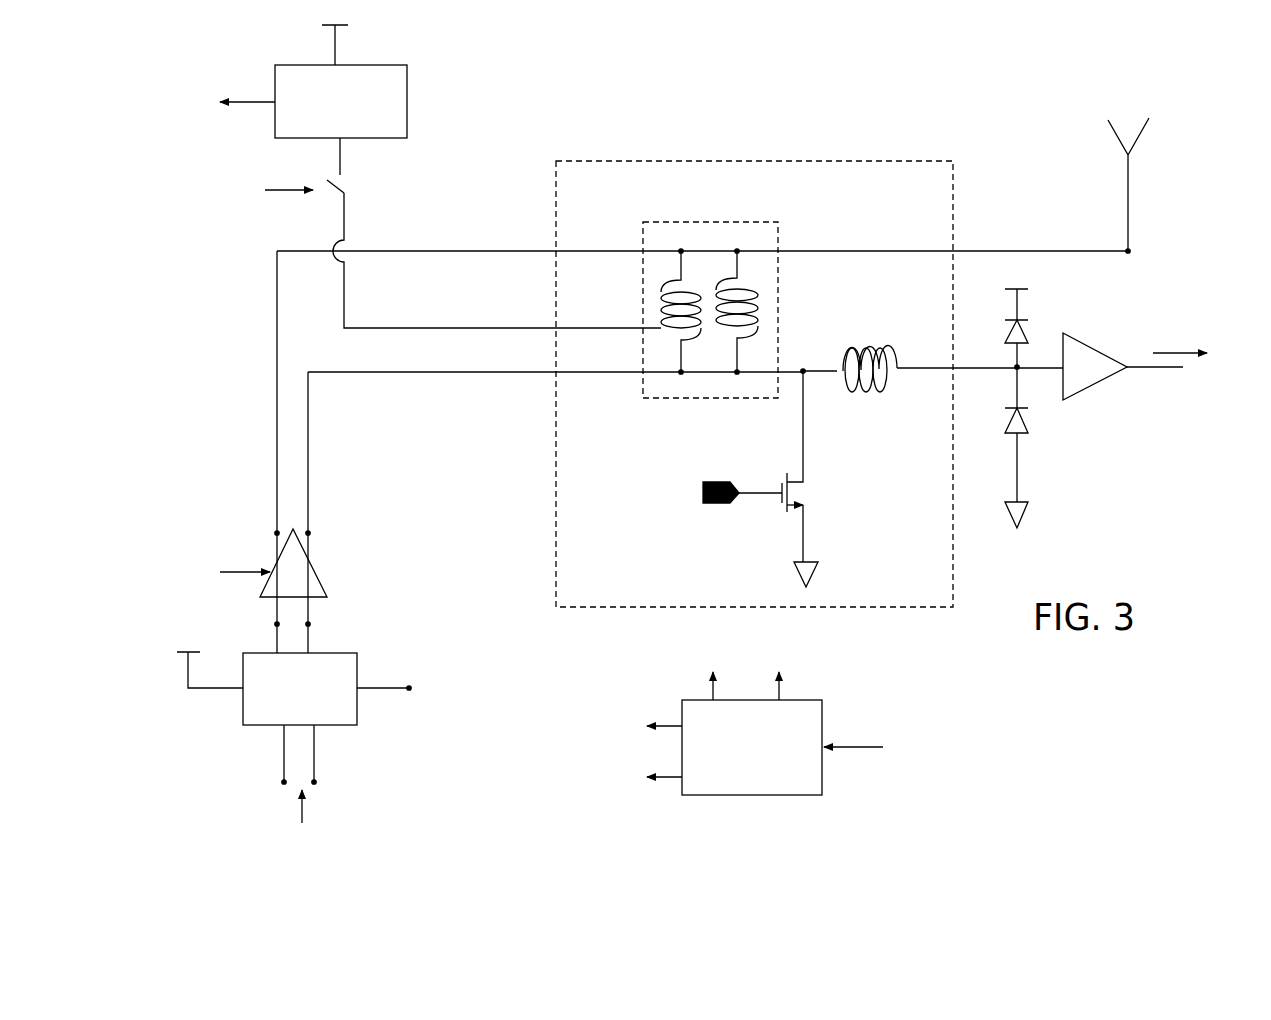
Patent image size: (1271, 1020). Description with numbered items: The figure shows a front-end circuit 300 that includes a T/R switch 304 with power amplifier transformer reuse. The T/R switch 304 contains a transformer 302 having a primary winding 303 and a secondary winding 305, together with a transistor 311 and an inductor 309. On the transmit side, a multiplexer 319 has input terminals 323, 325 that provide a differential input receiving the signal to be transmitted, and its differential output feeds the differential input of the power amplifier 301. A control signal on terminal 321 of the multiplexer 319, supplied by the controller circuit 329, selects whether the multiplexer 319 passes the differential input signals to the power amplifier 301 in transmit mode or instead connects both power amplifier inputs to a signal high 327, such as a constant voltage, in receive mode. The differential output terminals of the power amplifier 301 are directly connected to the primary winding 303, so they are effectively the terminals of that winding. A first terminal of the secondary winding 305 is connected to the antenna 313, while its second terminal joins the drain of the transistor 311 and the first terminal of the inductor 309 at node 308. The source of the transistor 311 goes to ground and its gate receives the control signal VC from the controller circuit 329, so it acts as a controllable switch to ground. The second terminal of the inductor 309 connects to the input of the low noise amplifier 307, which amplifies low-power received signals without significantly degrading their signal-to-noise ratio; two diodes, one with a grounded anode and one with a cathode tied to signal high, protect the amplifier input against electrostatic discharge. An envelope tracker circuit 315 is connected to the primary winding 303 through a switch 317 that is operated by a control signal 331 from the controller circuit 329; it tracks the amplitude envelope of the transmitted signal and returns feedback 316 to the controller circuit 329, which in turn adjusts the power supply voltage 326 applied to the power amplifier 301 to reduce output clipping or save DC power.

The front-end circuit 300 is at (1098, 55).
The power amplifier 301 is at (323, 578).
The transformer 302 is at (735, 221).
The primary winding 303 is at (655, 312).
The T/R switch 304 is at (815, 158).
The secondary winding 305 is at (750, 300).
The low noise amplifier 307 is at (1095, 388).
The node 308 is at (803, 360).
The inductor 309 is at (865, 395).
The transistor 311 is at (820, 495).
The antenna 313 is at (1115, 158).
The envelope tracker circuit 315 is at (407, 88).
The feedback 316 is at (897, 725).
The switch 317 is at (348, 188).
The multiplexer 319 is at (357, 660).
The control signal terminal / diode 321 is at (1030, 440).
The input terminal / diode 323 is at (1030, 320).
The input terminal 325 is at (283, 782).
The power supply voltage 326 is at (232, 570).
The signal high 327 is at (183, 645).
The controller circuit 329 is at (805, 700).
The control signal 331 is at (268, 188).